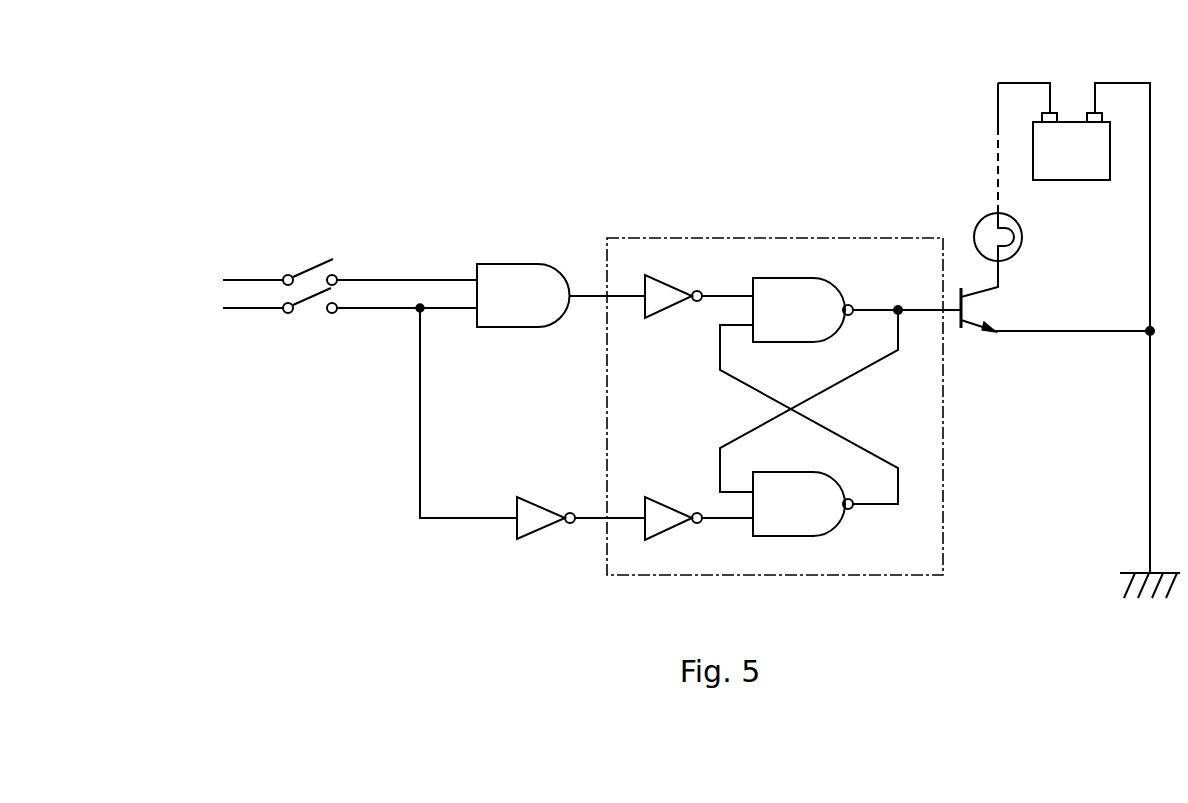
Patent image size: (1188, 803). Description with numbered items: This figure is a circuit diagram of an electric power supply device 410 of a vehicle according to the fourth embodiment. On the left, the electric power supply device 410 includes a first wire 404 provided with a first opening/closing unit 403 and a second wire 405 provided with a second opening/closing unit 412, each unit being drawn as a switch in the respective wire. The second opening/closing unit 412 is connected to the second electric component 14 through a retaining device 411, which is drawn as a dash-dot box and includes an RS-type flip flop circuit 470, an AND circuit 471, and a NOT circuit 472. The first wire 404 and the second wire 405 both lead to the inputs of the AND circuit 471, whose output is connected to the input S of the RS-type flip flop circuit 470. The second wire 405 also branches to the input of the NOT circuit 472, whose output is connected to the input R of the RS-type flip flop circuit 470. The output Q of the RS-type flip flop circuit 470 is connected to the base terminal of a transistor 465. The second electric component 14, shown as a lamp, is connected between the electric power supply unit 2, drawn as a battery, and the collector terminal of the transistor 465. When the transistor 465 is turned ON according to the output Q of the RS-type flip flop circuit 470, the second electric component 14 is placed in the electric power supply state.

The electric power supply unit 2 is at (1073, 180).
The second electric component 14 is at (978, 222).
The first opening/closing unit 403 is at (310, 258).
The first wire 404 is at (383, 276).
The second wire 405 is at (383, 312).
The electric power supply device 410 is at (445, 226).
The retaining device 411 is at (775, 337).
The second opening/closing unit 412 is at (316, 313).
The transistor 465 is at (991, 306).
The RS-type flip flop circuit 470 is at (810, 238).
The AND circuit 471 is at (514, 263).
The NOT circuit 472 is at (540, 545).